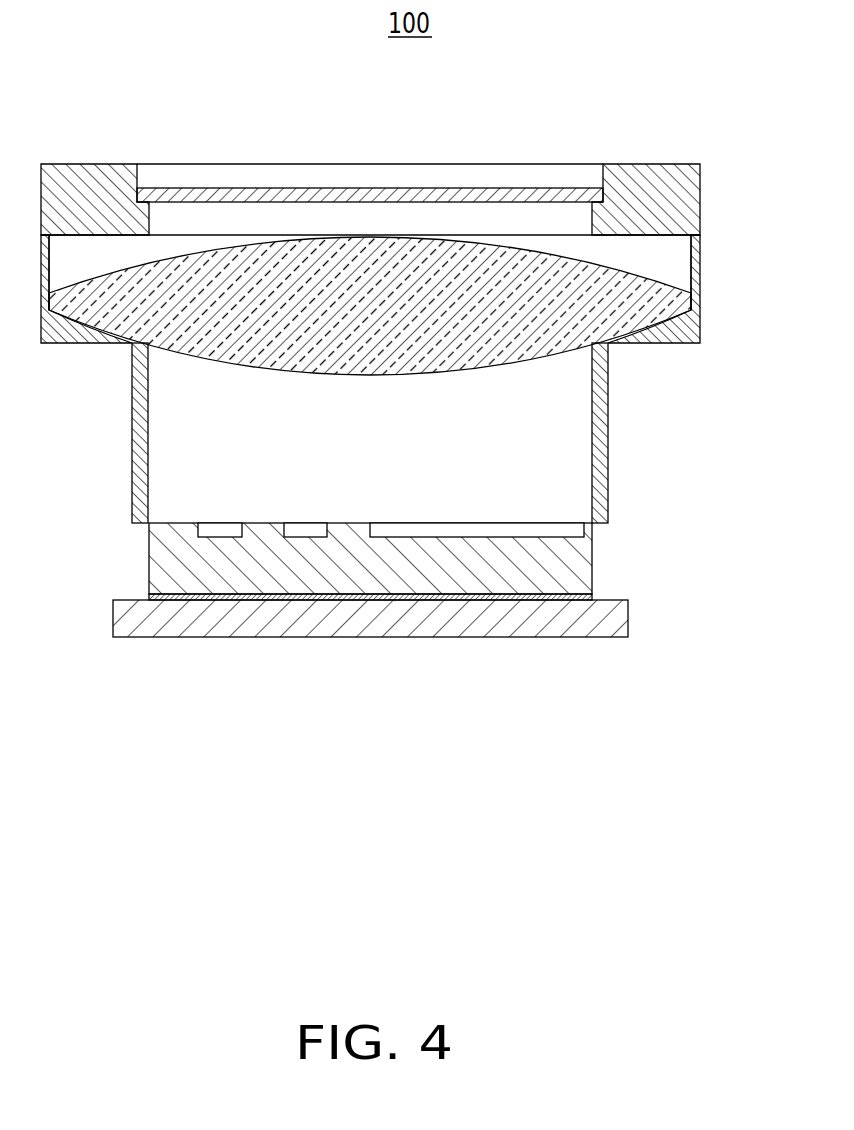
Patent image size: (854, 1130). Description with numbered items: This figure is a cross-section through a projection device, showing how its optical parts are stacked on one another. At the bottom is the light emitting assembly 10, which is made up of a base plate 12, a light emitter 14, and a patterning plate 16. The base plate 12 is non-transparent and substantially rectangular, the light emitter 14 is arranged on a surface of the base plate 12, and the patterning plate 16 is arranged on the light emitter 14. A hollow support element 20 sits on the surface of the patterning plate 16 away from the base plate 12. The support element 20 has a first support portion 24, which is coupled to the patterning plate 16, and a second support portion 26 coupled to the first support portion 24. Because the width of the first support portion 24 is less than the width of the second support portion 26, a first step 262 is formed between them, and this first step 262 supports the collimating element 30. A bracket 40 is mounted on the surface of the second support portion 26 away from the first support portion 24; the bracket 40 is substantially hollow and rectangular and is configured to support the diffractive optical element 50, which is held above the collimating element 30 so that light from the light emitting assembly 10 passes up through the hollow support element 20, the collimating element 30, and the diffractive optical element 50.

The light emitting assembly 10 is at (449, 611).
The base plate 12 is at (413, 649).
The light emitter 14 is at (592, 598).
The patterning plate 16 is at (579, 569).
The support element 20 is at (430, 379).
The first support portion 24 is at (605, 397).
The second support portion 26 is at (692, 323).
The first step 262 is at (670, 280).
The collimating element 30 is at (210, 333).
The bracket 40 is at (678, 217).
The diffractive optical element 50 is at (560, 190).